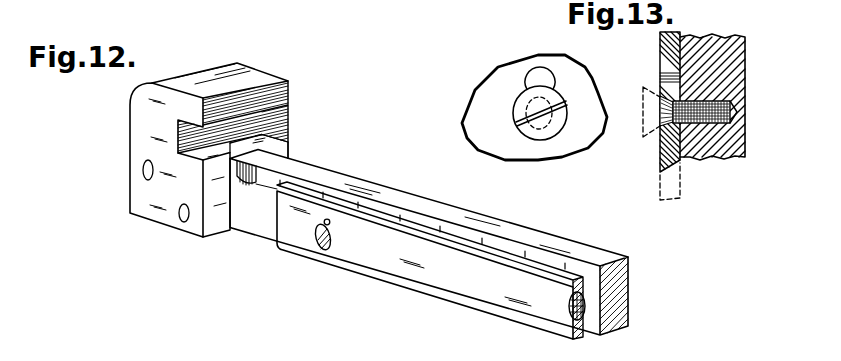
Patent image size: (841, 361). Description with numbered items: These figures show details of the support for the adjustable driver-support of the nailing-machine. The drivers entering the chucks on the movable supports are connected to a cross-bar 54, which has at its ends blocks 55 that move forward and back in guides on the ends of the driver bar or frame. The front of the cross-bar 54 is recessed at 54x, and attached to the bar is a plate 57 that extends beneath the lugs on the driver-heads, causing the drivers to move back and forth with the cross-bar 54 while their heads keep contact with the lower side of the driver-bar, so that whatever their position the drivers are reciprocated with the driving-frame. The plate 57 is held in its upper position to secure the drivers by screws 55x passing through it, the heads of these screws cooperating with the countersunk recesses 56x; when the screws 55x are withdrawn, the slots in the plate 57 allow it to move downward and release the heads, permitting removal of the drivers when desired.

In FIG. 12, the cross-bar 54 is at (483, 222).
In FIG. 13, the cross-bar 54 is at (745, 141).
In FIG. 12, the recess 54x is at (266, 178).
In FIG. 12, the block 55 is at (137, 122).
In FIG. 12, the screw 55x is at (323, 251).
In FIG. 13, the screw 55x is at (664, 122).
In FIG. 12, the countersunk recess 56x is at (331, 224).
In FIG. 13, the countersunk recess 56x is at (553, 83).
In FIG. 12, the plate 57 is at (430, 260).
In FIG. 13, the plate 57 is at (663, 161).